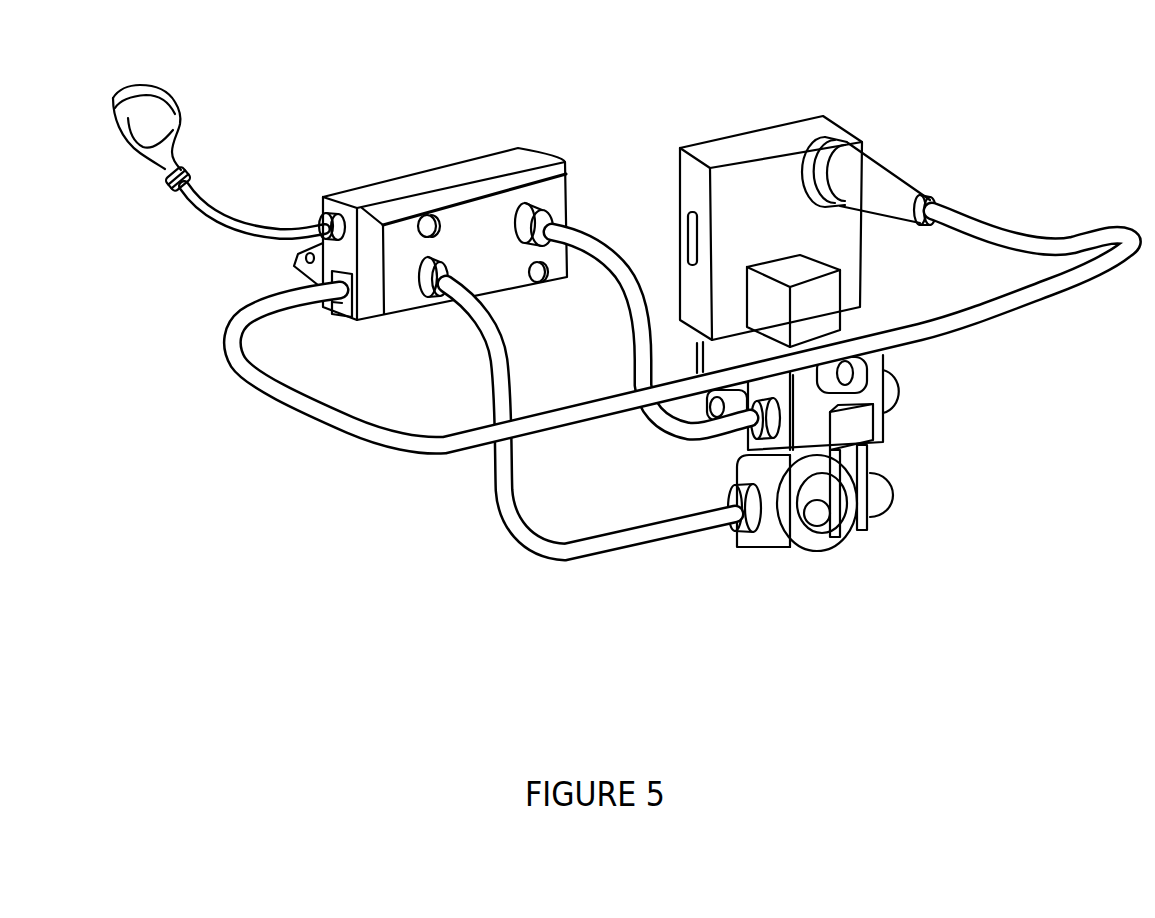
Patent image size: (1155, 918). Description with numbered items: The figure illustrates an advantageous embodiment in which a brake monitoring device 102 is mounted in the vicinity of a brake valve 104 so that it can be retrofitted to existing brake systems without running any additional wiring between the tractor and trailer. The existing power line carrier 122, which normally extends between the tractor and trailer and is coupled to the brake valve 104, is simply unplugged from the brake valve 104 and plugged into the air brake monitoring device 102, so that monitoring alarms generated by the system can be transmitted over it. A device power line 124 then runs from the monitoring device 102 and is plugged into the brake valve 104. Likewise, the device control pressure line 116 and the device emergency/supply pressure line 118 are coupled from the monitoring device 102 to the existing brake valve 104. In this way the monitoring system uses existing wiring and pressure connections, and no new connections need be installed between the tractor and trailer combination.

The brake monitoring device 102 is at (518, 146).
The brake valve 104 is at (743, 134).
The device control pressure line 116 is at (599, 231).
The device emergency/supply pressure line 118 is at (577, 563).
The power line carrier 122 is at (211, 223).
The device power line 124 is at (391, 430).